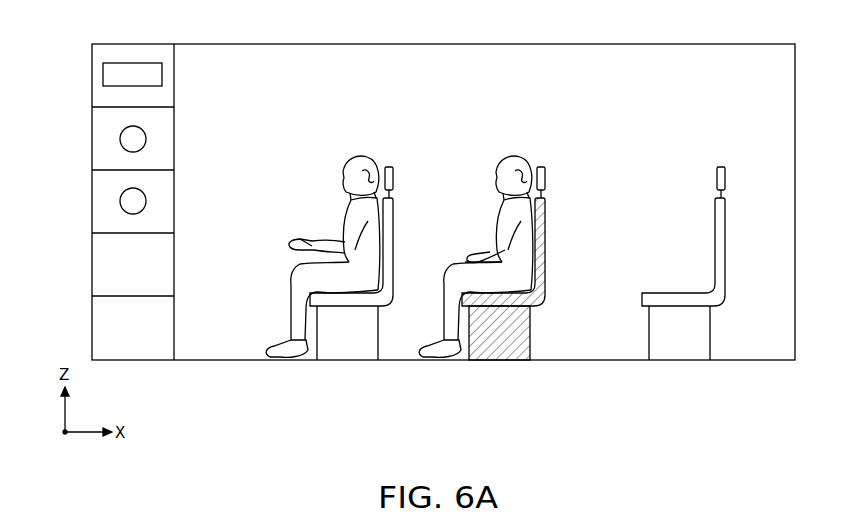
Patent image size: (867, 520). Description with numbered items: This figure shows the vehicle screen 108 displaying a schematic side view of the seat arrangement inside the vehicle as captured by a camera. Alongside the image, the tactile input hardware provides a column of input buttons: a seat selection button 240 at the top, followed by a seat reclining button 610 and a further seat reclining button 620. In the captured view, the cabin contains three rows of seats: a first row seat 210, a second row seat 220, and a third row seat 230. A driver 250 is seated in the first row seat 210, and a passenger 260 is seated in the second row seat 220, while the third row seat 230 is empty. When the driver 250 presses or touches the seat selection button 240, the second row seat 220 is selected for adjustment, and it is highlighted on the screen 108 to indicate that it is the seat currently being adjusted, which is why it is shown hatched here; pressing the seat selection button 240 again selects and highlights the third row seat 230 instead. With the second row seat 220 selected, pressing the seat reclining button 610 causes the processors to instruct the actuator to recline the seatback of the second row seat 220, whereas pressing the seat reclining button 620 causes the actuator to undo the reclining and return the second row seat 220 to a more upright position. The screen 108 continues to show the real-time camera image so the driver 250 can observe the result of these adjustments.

The screen 108 is at (450, 44).
The seat selection button 240 is at (103, 75).
The seat reclining button 610 is at (120, 139).
The seat reclining button 620 is at (120, 201).
The first row seat 210 is at (389, 165).
The second row seat 220 is at (541, 165).
The third row seat 230 is at (721, 165).
The driver 250 is at (353, 158).
The passenger 260 is at (505, 158).